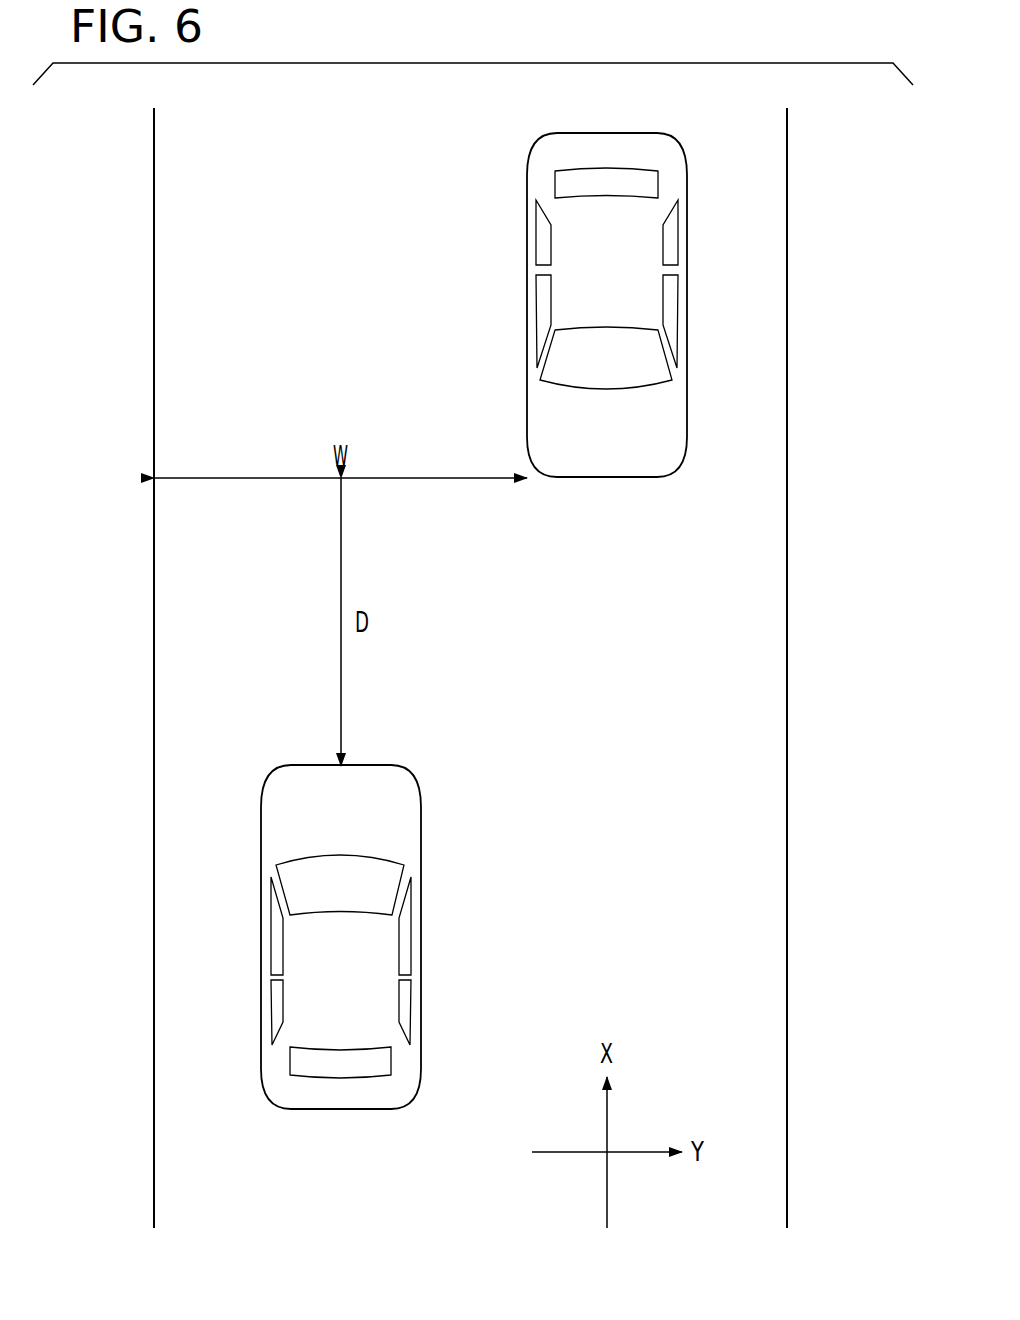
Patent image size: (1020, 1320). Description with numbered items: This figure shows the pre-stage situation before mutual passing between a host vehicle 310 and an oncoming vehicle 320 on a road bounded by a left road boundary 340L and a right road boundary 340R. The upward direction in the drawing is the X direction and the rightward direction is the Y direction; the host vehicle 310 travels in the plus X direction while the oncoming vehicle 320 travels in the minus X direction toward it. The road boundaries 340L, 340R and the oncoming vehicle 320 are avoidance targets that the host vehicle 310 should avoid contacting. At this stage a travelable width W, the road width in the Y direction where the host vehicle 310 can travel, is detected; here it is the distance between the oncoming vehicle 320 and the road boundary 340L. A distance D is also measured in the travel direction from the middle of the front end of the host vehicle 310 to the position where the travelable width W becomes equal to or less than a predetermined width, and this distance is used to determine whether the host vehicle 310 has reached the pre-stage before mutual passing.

The host vehicle 310 is at (340, 1110).
The oncoming vehicle 320 is at (606, 133).
The road boundary 340L is at (154, 193).
The road boundary 340R is at (787, 193).